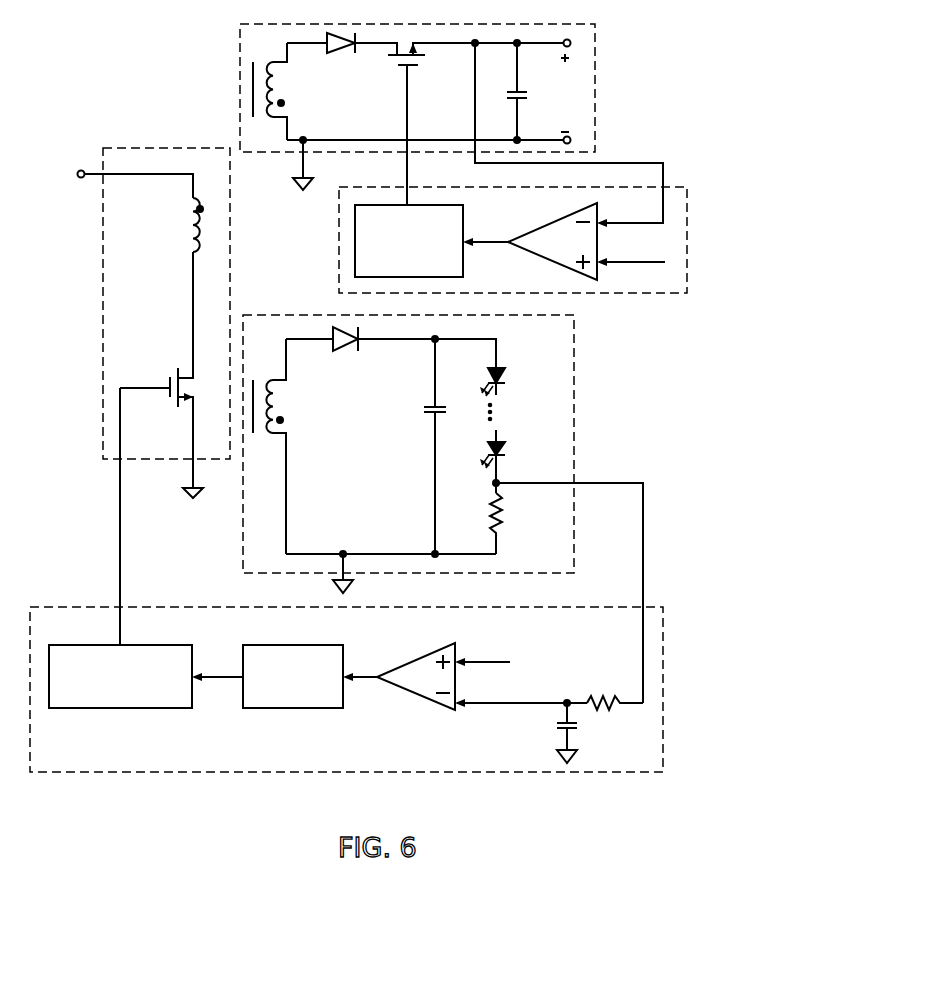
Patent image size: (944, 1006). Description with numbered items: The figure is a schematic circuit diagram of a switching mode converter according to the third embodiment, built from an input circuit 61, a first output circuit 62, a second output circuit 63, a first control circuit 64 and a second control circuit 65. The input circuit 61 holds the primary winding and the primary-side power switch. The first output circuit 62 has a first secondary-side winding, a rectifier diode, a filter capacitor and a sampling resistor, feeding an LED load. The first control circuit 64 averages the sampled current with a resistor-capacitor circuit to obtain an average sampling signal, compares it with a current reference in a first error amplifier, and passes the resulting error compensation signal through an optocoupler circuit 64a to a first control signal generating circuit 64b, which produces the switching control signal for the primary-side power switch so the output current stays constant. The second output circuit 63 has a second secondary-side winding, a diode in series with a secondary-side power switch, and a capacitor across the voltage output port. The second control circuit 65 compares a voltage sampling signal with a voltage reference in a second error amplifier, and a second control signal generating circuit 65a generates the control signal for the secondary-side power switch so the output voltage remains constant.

The input circuit 61 is at (140, 148).
The first output circuit 62 is at (613, 396).
The second output circuit 63 is at (595, 45).
The first control circuit 64 is at (377, 689).
The optocoupler circuit 64a is at (293, 676).
The first control signal generating circuit 64b is at (120, 676).
The second control circuit 65 is at (536, 240).
The second control signal generating circuit 65a is at (409, 241).